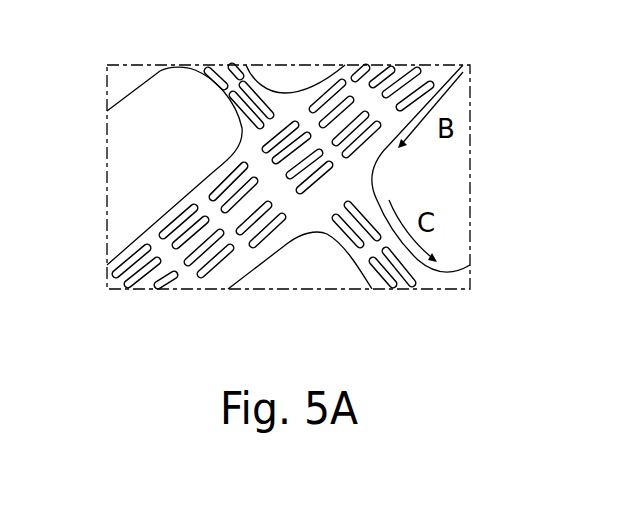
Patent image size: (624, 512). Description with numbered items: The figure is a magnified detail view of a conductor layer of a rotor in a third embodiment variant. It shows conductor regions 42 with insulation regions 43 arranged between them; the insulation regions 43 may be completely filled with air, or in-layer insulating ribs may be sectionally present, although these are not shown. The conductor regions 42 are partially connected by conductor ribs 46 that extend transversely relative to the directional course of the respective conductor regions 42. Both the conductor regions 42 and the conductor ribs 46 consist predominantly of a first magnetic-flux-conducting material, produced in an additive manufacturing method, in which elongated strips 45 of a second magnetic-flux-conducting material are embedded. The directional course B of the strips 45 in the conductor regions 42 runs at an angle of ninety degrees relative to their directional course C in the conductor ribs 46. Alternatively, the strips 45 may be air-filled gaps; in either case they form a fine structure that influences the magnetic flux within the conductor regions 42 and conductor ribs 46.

The conductor regions 42 is at (133, 105).
The insulation regions 43 is at (116, 213).
The strips 45 is at (287, 118).
The conductor ribs 46 is at (208, 102).